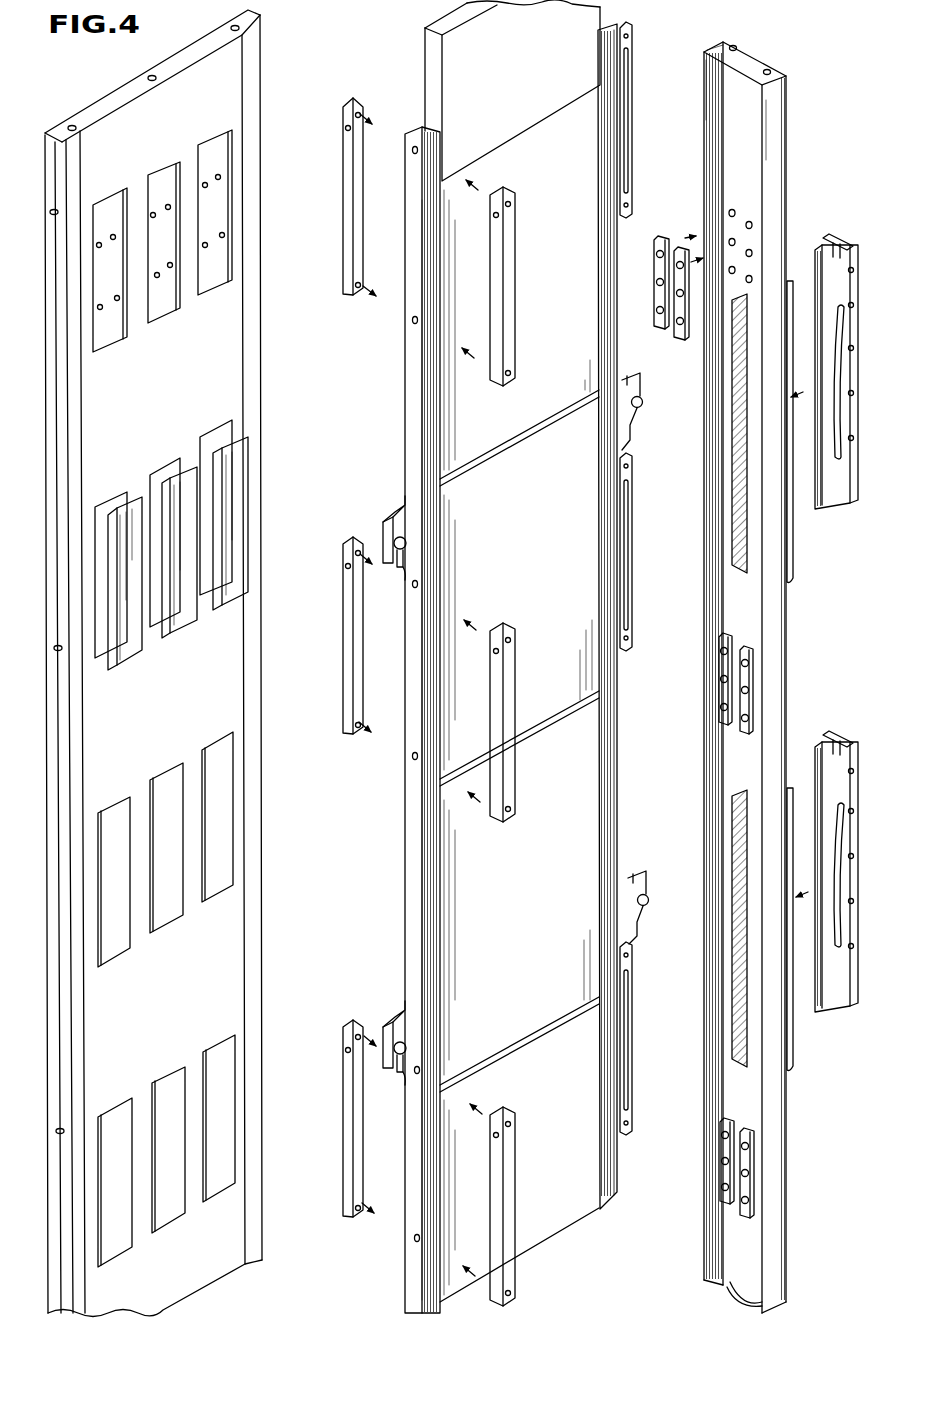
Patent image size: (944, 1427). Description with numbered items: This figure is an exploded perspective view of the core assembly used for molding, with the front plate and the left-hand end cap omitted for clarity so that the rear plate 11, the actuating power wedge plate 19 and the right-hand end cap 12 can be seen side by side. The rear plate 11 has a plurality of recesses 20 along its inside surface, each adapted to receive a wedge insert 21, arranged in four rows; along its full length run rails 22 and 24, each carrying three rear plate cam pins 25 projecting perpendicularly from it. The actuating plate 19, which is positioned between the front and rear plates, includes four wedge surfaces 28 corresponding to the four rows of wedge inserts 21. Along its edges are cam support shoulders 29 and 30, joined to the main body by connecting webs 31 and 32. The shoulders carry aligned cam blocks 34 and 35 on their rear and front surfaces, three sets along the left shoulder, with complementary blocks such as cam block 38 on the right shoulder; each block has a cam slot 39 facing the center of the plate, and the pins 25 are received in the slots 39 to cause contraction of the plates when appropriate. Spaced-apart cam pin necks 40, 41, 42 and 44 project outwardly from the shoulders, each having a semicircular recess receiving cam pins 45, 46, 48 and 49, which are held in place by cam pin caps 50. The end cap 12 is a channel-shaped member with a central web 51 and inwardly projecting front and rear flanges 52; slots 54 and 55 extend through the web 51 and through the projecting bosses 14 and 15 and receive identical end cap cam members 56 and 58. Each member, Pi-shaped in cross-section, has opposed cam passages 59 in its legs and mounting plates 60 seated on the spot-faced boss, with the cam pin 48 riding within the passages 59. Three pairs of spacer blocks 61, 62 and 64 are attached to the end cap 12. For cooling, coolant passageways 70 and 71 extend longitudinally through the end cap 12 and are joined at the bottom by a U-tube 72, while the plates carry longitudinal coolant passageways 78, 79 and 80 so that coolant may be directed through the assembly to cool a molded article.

The rear plate 11 is at (258, 918).
The right-hand end cap 12 is at (785, 183).
The projecting boss 14 is at (787, 302).
The projecting boss 15 is at (792, 1038).
The actuating power wedge plate 19 is at (427, 62).
The recesses 20 is at (205, 156).
The wedge insert 21 is at (228, 600).
The rail 22 is at (76, 492).
The rail 24 is at (258, 340).
The rear plate cam pin 25 is at (54, 212).
The wedge surface 28 is at (519, 746).
The cam support shoulder 29 is at (412, 382).
The cam support shoulder 30 is at (620, 733).
The connecting web 31 is at (430, 420).
The connecting web 32 is at (615, 785).
The cam block 34 is at (342, 215).
The cam block 35 is at (506, 259).
The cam block 38 is at (633, 80).
The cam slot 39 is at (630, 155).
The cam pin neck 40 is at (408, 535).
The cam pin neck 41 is at (408, 1015).
The cam pin neck 42 is at (622, 418).
The cam pin neck 44 is at (620, 910).
The cam pin 45 is at (398, 564).
The cam pin 46 is at (404, 1058).
The cam pin 48 is at (637, 420).
The cam pin 49 is at (643, 906).
The cam pin cap 50 is at (384, 525).
The central web 51 is at (754, 55).
The flange 52 is at (711, 96).
The slot 54 is at (735, 478).
The slot 55 is at (736, 1043).
The end cap cam member 56 is at (838, 240).
The end cap cam member 58 is at (840, 740).
The cam passage 59 is at (839, 382).
The mounting plate 60 is at (855, 287).
The spacer blocks 61 is at (672, 218).
The spacer blocks 62 is at (725, 660).
The spacer blocks 64 is at (727, 1150).
The coolant passageway 70 is at (736, 45).
The coolant passageway 71 is at (772, 73).
The U-tube 72 is at (727, 1288).
The coolant passageway 78 is at (72, 127).
The coolant passageway 79 is at (152, 78).
The coolant passageway 80 is at (235, 28).